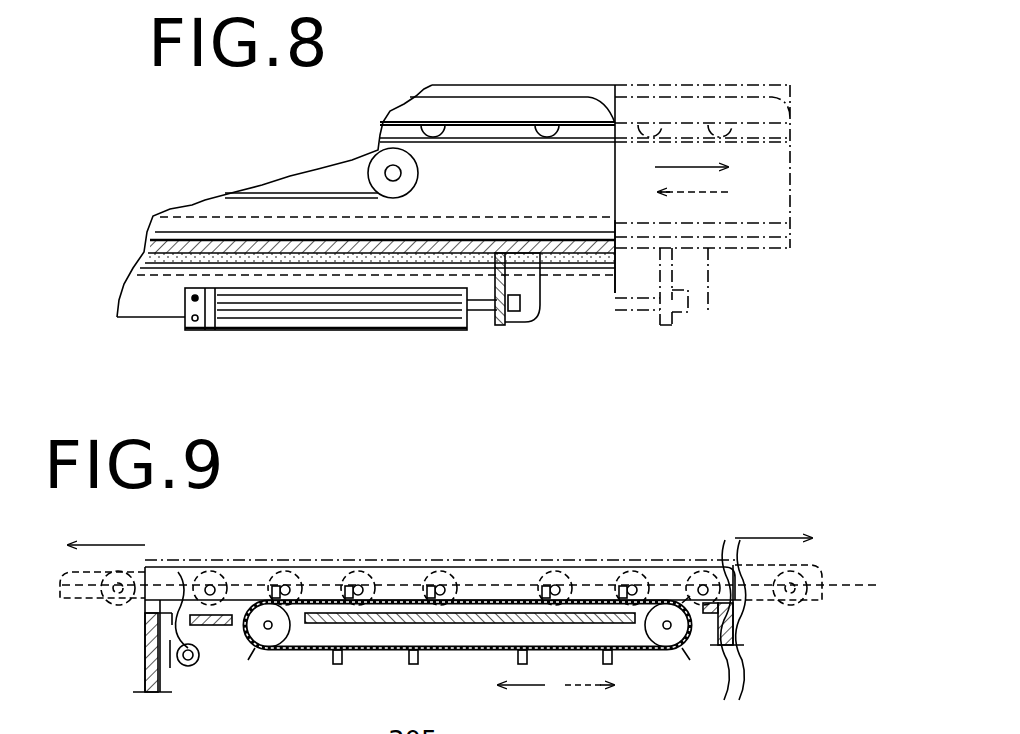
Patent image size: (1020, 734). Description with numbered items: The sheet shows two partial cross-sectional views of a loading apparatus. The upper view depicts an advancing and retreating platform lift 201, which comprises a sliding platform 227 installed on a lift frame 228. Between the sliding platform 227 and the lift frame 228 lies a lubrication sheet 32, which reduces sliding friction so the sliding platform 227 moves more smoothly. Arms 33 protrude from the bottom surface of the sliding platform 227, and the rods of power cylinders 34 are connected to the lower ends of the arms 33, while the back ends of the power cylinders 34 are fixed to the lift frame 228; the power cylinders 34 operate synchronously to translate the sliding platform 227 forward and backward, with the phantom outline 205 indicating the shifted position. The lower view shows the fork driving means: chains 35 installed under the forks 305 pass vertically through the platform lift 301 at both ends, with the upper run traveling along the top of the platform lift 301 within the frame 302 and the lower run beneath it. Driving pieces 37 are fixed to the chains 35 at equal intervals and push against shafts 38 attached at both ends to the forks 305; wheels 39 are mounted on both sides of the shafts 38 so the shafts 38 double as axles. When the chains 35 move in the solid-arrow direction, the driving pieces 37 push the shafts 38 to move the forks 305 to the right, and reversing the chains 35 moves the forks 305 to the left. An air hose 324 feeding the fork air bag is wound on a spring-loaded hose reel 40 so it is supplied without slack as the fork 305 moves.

In FIG. 8, the upper guide housing 205 is at (542, 93).
In FIG. 8, the platform lift 201 is at (476, 128).
In FIG. 8, the sliding platform 227 is at (200, 240).
In FIG. 8, the lubrication sheet 32 is at (150, 240).
In FIG. 8, the lift frame 228 is at (160, 318).
In FIG. 8, the power cylinder 34 is at (365, 325).
In FIG. 8, the arm 33 is at (532, 322).
In FIG. 9, the conveyor frame 302 is at (556, 556).
In FIG. 9, the fork 305 is at (663, 572).
In FIG. 9, the wheel 39 is at (216, 597).
In FIG. 9, the shaft 38 is at (447, 582).
In FIG. 9, the platform lift 301 is at (594, 596).
In FIG. 9, the air hose 324 is at (178, 572).
In FIG. 9, the hose reel 40 is at (190, 666).
In FIG. 9, the chain 35 is at (300, 655).
In FIG. 9, the driving piece 37 is at (343, 590).